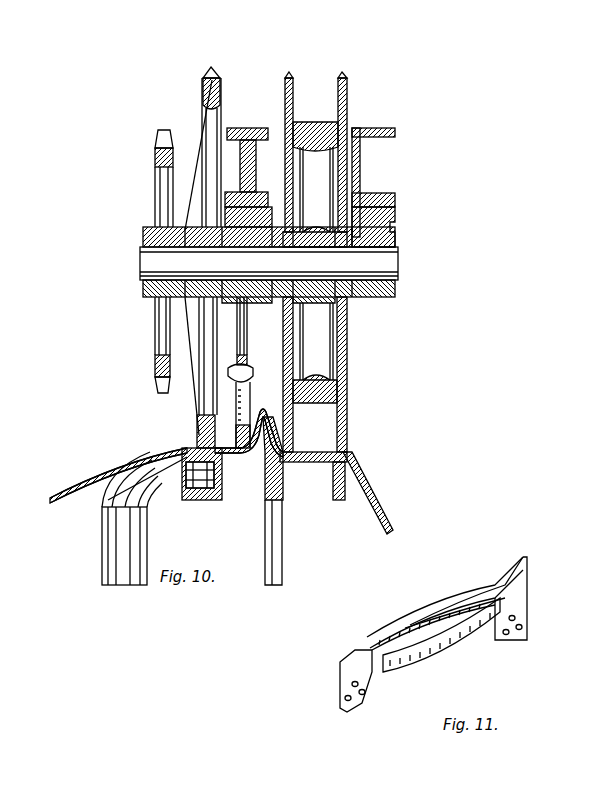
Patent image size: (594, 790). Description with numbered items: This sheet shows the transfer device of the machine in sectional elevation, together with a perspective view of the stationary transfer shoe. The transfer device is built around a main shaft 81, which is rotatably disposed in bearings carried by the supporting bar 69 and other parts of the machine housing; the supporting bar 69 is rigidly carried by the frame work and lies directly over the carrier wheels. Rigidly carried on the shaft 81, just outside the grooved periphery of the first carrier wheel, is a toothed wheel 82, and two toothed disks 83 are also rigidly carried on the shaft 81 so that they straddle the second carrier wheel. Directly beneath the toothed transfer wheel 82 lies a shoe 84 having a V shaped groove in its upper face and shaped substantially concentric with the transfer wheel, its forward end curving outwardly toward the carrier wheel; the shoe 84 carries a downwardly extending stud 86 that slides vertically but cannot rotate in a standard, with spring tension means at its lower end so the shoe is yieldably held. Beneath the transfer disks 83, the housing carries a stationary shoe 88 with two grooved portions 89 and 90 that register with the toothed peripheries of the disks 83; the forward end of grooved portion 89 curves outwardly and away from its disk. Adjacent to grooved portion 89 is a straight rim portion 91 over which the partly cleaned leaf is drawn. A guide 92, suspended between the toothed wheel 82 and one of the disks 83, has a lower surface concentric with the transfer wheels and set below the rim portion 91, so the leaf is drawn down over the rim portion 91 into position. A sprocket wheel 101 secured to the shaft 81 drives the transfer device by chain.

In FIG. 10, the supporting bar 69 is at (259, 128).
In FIG. 10, the main shaft 81 is at (148, 259).
In FIG. 10, the toothed wheel 82 is at (204, 85).
In FIG. 10, the toothed disks 83 is at (340, 80).
In FIG. 10, the shoe 84 is at (130, 497).
In FIG. 10, the stud 86 is at (118, 550).
In FIG. 10, the stationary shoe 88 is at (276, 528).
In FIG. 11, the stationary shoe 88 is at (515, 606).
In FIG. 10, the grooved portion 89 is at (293, 462).
In FIG. 11, the grooved portion 89 is at (492, 585).
In FIG. 10, the grooved portion 90 is at (333, 462).
In FIG. 11, the grooved portion 90 is at (465, 645).
In FIG. 10, the straight rim portion 91 is at (257, 445).
In FIG. 11, the straight rim portion 91 is at (452, 612).
In FIG. 10, the guide 92 is at (251, 412).
In FIG. 10, the sprocket wheel 101 is at (158, 366).